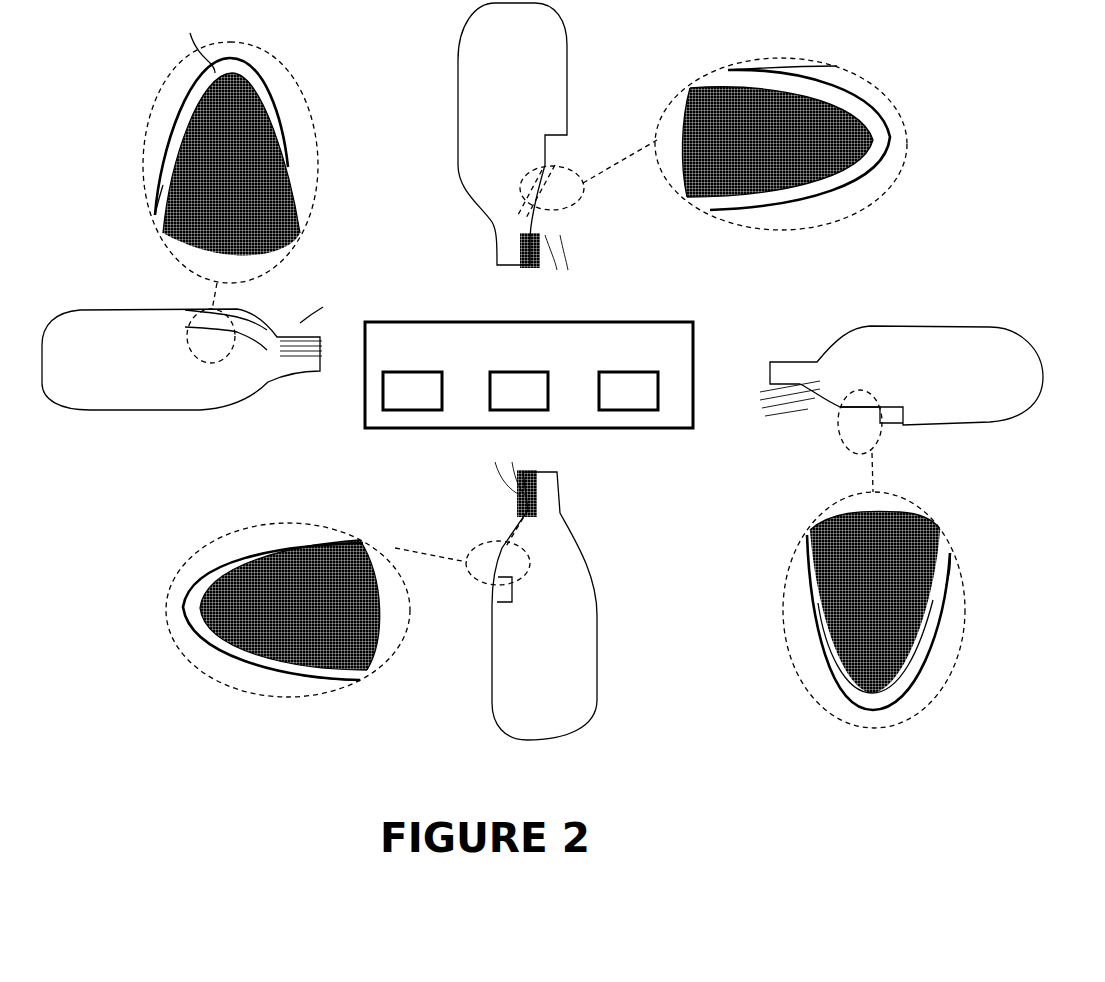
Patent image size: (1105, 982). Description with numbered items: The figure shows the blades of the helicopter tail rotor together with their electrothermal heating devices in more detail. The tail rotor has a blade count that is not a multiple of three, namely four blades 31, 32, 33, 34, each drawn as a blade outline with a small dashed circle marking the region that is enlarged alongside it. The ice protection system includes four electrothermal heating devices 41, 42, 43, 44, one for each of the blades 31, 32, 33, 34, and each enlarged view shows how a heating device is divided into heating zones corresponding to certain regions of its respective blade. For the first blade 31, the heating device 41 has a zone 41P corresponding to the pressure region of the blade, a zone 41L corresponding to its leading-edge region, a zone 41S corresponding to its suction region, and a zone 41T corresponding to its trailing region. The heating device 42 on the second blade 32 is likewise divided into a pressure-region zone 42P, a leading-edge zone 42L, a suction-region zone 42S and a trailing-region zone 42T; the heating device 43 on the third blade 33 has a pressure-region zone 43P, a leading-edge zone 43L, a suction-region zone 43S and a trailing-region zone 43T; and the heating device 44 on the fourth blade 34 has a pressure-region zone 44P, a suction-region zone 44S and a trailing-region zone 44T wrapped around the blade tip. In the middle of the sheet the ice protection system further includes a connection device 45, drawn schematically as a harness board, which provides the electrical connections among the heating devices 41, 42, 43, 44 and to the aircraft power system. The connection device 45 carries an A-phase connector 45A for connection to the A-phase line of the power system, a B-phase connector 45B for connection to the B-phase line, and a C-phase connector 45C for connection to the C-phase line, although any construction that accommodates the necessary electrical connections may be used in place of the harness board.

The blade 31 is at (513, 136).
The blade 32 is at (901, 375).
The blade 33 is at (544, 601).
The blade 34 is at (182, 358).
The electrothermal heating device 41 is at (561, 151).
The trailing-region zone 41T is at (832, 75).
The suction-region zone 41S is at (837, 102).
The leading-edge zone 41L is at (880, 147).
The pressure-region zone 41P is at (837, 183).
The electrothermal heating device 42 is at (826, 401).
The trailing-region zone 42T is at (933, 575).
The suction-region zone 42S is at (912, 658).
The leading-edge zone 42L is at (872, 713).
The pressure-region zone 42P is at (830, 660).
The electrothermal heating device 43 is at (516, 537).
The trailing-region zone 43T is at (310, 670).
The suction-region zone 43S is at (243, 653).
The leading-edge zone 43L is at (187, 608).
The pressure-region zone 43P is at (227, 562).
The electrothermal heating device 44 is at (242, 333).
The trailing-region zone 44T is at (163, 192).
The suction-region zone 44S is at (170, 135).
The pressure-region zone 44P is at (253, 108).
The connection device 45 is at (529, 375).
The A-phase connector 45A is at (412, 391).
The B-phase connector 45B is at (519, 391).
The C-phase connector 45C is at (628, 391).